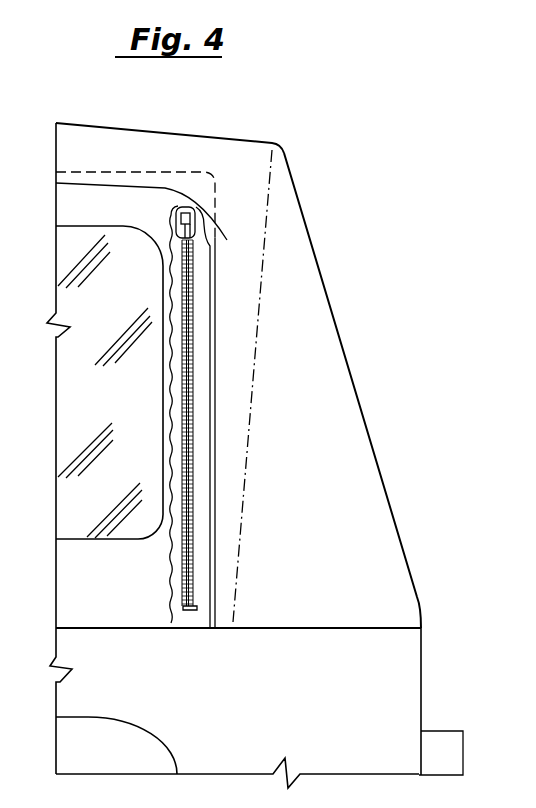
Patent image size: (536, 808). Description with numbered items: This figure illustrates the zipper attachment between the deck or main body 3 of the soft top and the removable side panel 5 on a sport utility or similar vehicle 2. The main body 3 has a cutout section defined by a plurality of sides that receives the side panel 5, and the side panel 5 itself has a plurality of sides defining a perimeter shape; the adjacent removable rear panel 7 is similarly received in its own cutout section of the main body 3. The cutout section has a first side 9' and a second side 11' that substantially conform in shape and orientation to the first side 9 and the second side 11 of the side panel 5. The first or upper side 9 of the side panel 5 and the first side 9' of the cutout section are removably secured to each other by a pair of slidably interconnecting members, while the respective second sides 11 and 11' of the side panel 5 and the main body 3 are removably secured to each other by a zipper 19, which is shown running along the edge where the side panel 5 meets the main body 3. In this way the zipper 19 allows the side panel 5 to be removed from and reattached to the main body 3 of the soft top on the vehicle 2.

The vehicle 2 is at (238, 722).
The deck or main body 3 is at (222, 138).
The side panel 5 is at (112, 410).
The rear panel 7 is at (342, 338).
The first side 9 is at (109, 373).
The first side of cutout section 9' is at (141, 163).
The second side 11 is at (146, 414).
The second side of cutout section 11' is at (250, 417).
The zipper 19 is at (191, 287).